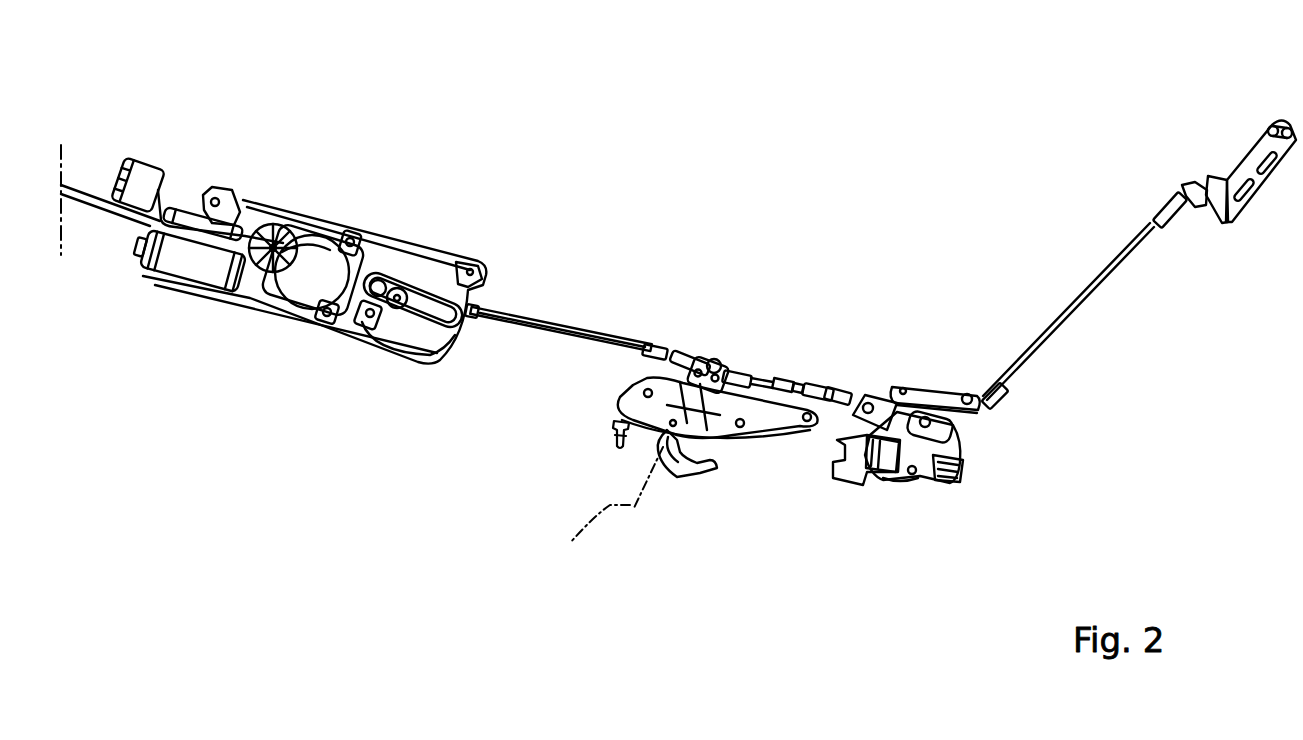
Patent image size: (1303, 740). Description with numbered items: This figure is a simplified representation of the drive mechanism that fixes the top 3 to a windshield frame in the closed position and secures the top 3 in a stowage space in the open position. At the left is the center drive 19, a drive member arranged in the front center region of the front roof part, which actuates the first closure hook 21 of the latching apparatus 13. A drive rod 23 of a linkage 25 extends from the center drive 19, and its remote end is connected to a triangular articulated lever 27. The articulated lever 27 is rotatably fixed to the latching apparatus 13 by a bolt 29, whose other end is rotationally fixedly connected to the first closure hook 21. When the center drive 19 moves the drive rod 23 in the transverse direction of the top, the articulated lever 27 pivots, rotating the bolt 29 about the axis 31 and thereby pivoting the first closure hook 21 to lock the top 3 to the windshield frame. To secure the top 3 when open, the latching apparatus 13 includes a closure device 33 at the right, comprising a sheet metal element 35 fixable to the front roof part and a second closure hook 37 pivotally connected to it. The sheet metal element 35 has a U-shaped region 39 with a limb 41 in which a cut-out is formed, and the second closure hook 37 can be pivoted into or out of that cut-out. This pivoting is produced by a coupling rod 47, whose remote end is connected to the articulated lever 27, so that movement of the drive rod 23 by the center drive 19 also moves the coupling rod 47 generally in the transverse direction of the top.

The top 3 is at (236, 88).
The latching apparatus 13 is at (843, 582).
The center drive 19 is at (265, 300).
The first closure hook 21 is at (690, 473).
The drive rod 23 is at (517, 323).
The linkage 25 is at (553, 322).
The articulated lever 27 is at (702, 360).
The bolt 29 is at (663, 440).
The axis 31 is at (597, 507).
The closure device 33 is at (983, 478).
The sheet metal element 35 is at (922, 486).
The second closure hook 37 is at (830, 490).
The U-shaped region 39 is at (890, 487).
The limb 41 is at (845, 487).
The coupling rod 47 is at (770, 377).